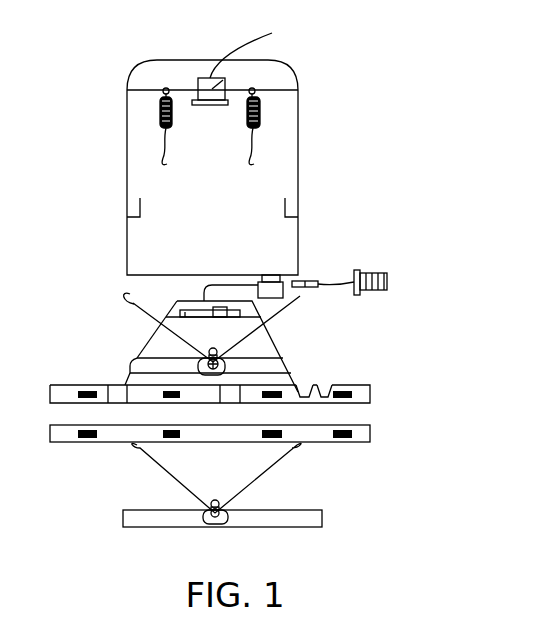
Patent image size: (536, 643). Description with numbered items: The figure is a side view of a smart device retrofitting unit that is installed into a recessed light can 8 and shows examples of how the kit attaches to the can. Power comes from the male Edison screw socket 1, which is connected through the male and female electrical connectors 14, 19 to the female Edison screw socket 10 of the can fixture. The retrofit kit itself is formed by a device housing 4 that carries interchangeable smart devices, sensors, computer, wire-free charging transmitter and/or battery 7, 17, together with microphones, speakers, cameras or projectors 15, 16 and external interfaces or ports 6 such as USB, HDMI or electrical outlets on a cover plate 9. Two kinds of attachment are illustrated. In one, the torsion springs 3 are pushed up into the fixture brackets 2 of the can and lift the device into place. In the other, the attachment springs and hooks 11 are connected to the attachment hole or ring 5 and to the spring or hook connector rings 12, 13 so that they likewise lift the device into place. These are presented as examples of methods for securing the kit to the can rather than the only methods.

The Edison socket male adapter 1 is at (379, 264).
The brackets 2 is at (289, 207).
The wire hooks and/or springs 3 is at (187, 337).
The device housing 4 is at (142, 335).
The attachment hole 5 is at (213, 494).
The external interface and/or port 6 is at (276, 400).
The interchangeable smart device 7 is at (227, 406).
The recessed light can 8 is at (140, 66).
The cover plate 9 is at (355, 447).
The Edison socket female adapter 10 is at (225, 80).
The attachment spring and hook 11 is at (160, 118).
The spring/hook connector ring 12 is at (299, 532).
The spring/hook connector ring 13 is at (297, 366).
The electrical connector 14 is at (313, 268).
The microphone, speaker, camera, or projector 15 is at (329, 382).
The microphone, speaker, camera, or projector 16 is at (309, 382).
The interchangeable smart device 17 is at (172, 306).
The electrical connector 19 is at (299, 296).